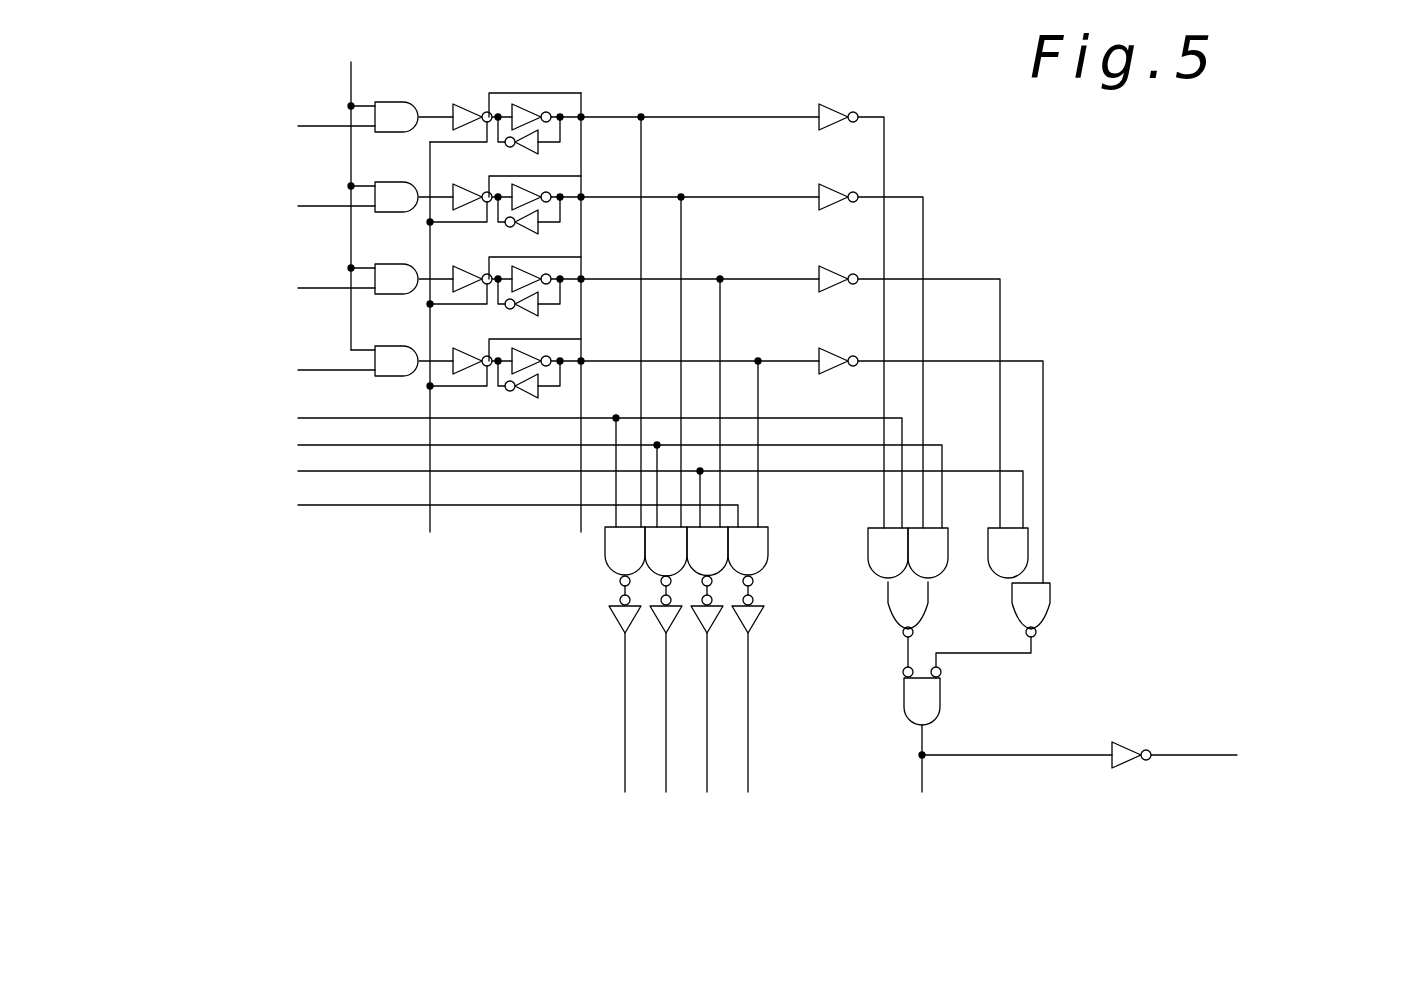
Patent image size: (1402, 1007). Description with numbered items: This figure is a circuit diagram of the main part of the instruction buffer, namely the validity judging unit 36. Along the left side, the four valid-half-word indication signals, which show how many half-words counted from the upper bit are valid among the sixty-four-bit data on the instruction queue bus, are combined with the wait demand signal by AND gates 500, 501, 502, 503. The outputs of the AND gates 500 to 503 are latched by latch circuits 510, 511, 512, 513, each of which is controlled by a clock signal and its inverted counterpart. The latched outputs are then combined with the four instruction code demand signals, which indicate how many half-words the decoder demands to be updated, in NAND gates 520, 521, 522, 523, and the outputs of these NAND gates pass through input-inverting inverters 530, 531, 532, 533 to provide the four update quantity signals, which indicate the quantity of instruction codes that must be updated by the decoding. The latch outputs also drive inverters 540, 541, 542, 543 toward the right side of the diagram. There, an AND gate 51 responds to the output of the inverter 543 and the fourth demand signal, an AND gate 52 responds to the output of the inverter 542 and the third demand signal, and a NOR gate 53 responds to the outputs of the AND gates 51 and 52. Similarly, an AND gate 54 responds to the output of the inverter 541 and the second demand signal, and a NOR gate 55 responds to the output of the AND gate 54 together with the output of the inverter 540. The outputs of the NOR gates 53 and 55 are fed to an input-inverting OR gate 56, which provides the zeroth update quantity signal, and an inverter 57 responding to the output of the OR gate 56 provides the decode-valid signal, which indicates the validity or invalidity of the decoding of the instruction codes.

The validity judging unit 36 is at (1118, 212).
The AND gate 500 is at (401, 345).
The AND gate 501 is at (401, 263).
The AND gate 502 is at (401, 181).
The AND gate 503 is at (441, 84).
The latch circuit 510 is at (550, 344).
The latch circuit 511 is at (552, 260).
The latch circuit 512 is at (556, 168).
The latch circuit 513 is at (535, 88).
The NAND gate 520 is at (755, 563).
The NAND gate 521 is at (715, 548).
The NAND gate 522 is at (655, 555).
The NAND gate 523 is at (617, 555).
The inverter of input inverting type 530 is at (750, 620).
The inverter of input inverting type 531 is at (708, 620).
The inverter of input inverting type 532 is at (662, 618).
The inverter of input inverting type 533 is at (622, 620).
The inverter 540 is at (836, 349).
The inverter 541 is at (836, 267).
The inverter 542 is at (836, 185).
The inverter 543 is at (836, 104).
The AND gate 51 is at (880, 565).
The AND gate 52 is at (935, 557).
The NOR gate 53 is at (903, 613).
The AND gate 54 is at (1018, 558).
The NOR gate 55 is at (1037, 604).
The OR gate of input inverting type 56 is at (928, 703).
The inverter 57 is at (1125, 745).